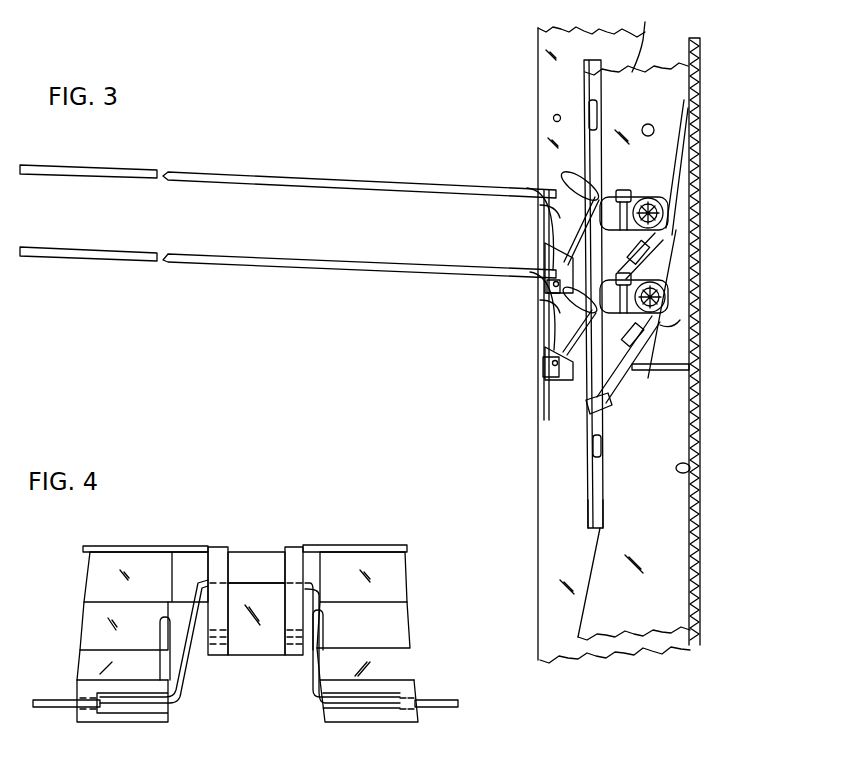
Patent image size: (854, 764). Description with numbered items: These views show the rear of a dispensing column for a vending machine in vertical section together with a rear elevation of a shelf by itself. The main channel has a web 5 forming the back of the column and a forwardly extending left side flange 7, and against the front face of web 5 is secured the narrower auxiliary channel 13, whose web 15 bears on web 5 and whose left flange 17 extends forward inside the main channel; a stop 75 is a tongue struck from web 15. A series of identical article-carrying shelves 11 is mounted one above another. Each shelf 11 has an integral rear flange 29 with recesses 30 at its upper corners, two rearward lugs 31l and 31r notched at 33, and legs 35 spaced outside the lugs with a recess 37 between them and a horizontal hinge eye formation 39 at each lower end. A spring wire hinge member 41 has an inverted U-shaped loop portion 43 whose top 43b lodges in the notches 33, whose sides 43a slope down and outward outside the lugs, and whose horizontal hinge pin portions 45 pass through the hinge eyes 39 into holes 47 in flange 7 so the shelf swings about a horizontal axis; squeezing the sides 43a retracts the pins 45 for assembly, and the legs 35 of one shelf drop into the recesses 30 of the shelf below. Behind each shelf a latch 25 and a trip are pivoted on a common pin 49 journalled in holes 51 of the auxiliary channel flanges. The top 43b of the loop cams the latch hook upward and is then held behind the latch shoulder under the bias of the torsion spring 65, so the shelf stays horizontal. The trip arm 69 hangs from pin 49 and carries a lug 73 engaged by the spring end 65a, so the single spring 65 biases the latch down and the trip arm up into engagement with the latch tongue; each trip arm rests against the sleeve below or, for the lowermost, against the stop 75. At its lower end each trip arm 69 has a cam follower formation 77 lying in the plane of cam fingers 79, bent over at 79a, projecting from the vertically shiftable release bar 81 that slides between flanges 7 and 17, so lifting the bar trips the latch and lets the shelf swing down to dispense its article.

In FIG. 3, the web 5 is at (702, 515).
In FIG. 3, the left side flange 7 is at (538, 45).
In FIG. 3, the article-carrying shelf 11 is at (280, 172).
In FIG. 4, the article-carrying shelf 11 is at (405, 547).
In FIG. 3, the auxiliary channel-section member 13 is at (633, 644).
In FIG. 3, the web 15 is at (700, 470).
In FIG. 3, the left side flange 17 is at (645, 30).
In FIG. 3, the latch 25 is at (560, 170).
In FIG. 3, the flange 29 is at (545, 235).
In FIG. 4, the flange 29 is at (410, 626).
In FIG. 4, the recess 30 is at (105, 578).
In FIG. 3, the right lug 31r is at (560, 210).
In FIG. 4, the right lug 31r is at (213, 655).
In FIG. 4, the left lug 31l is at (290, 655).
In FIG. 4, the notch 33 is at (218, 570).
In FIG. 3, the leg 35 is at (548, 260).
In FIG. 4, the leg 35 is at (78, 665).
In FIG. 4, the recess 37 is at (248, 700).
In FIG. 4, the hinge eye formation 39 is at (75, 722).
In FIG. 3, the hinge member 41 is at (565, 240).
In FIG. 4, the hinge member 41 is at (316, 580).
In FIG. 4, the loop portion 43 is at (318, 612).
In FIG. 4, the sides of loop portion 43a is at (333, 640).
In FIG. 4, the top of loop portion 43b is at (252, 583).
In FIG. 3, the hinge pin portion 45 is at (547, 284).
In FIG. 4, the hinge pin portion 45 is at (45, 700).
In FIG. 3, the hole 47 is at (553, 118).
In FIG. 3, the pin 49 is at (660, 198).
In FIG. 3, the hole 51 is at (648, 124).
In FIG. 3, the torsion spring 65 is at (682, 158).
In FIG. 3, the spring end 65a is at (660, 327).
In FIG. 3, the trip arm 69 is at (648, 243).
In FIG. 3, the lug 73 is at (642, 262).
In FIG. 3, the stop 75 is at (665, 370).
In FIG. 3, the cam follower formation 77 is at (590, 412).
In FIG. 3, the cam finger 79 is at (590, 103).
In FIG. 3, the bent-over part of cam finger 79a is at (603, 447).
In FIG. 3, the release bar 81 is at (596, 530).